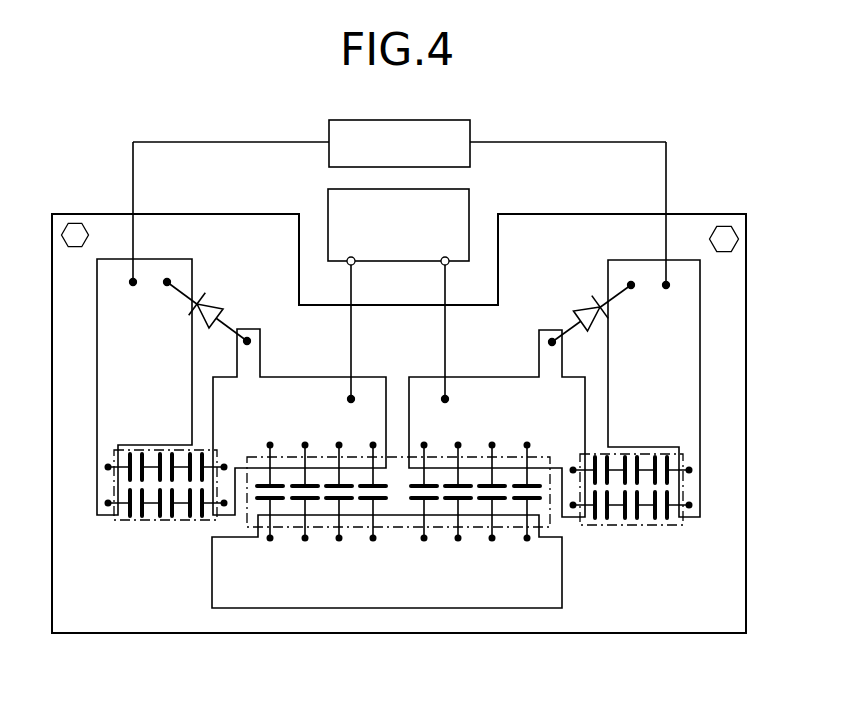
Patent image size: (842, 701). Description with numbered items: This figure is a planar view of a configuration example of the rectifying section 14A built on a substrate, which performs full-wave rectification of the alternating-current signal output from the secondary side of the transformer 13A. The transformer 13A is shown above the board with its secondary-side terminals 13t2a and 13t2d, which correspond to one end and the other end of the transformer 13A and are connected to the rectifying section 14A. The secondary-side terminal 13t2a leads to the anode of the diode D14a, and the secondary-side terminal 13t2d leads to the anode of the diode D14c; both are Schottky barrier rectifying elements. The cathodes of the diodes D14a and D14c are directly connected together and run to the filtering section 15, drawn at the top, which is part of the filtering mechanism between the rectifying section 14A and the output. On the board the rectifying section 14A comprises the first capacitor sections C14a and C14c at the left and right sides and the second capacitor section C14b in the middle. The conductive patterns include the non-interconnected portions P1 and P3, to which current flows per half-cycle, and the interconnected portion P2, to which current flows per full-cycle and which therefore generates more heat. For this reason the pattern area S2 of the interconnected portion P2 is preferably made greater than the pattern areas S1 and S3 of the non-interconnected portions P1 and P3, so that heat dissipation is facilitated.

The rectifying section 14A is at (192, 226).
The filtering section 15 is at (455, 138).
The transformer 13A is at (443, 285).
The secondary-side terminal 13t2a is at (363, 246).
The secondary-side terminal 13t2d is at (434, 246).
The diode D14a is at (198, 300).
The diode D14c is at (578, 312).
The non-interconnected portion P1 is at (299, 422).
The interconnected portion P2 is at (387, 596).
The non-interconnected portion P3 is at (497, 423).
The pattern area S1 is at (296, 412).
The pattern area S2 is at (293, 573).
The pattern area S3 is at (502, 412).
The first capacitor section C14a is at (168, 524).
The second capacitor section C14b is at (396, 528).
The first capacitor section C14c is at (628, 526).